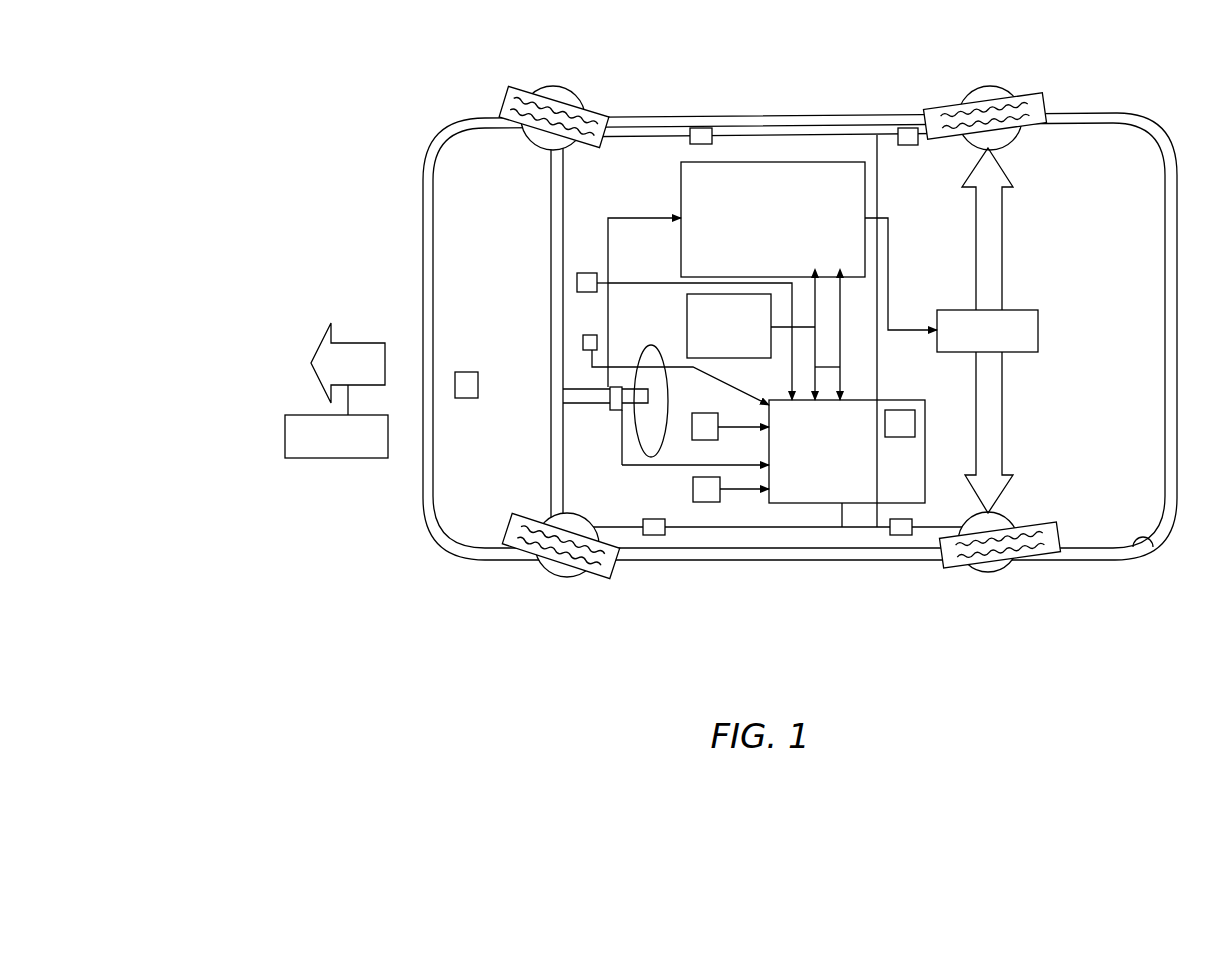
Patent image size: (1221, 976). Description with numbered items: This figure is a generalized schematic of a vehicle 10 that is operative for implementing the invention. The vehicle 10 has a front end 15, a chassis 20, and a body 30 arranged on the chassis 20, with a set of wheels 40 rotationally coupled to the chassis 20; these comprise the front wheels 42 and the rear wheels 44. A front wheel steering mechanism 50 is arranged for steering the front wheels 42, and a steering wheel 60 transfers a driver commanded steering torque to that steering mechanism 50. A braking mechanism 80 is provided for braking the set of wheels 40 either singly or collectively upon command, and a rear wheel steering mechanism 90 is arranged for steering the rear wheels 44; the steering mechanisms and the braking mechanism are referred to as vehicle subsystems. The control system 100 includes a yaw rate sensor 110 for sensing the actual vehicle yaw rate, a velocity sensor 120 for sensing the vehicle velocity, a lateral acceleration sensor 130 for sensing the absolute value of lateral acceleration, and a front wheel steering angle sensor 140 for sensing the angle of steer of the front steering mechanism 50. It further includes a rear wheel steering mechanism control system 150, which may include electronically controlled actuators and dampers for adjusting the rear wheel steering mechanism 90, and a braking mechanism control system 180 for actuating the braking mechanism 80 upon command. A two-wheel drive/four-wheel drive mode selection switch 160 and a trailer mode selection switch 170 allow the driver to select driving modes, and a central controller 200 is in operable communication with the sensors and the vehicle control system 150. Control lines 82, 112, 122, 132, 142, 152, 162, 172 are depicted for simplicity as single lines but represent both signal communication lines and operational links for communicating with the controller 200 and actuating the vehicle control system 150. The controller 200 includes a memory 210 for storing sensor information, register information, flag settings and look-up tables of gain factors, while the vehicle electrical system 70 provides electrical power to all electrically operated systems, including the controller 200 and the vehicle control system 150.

The vehicle 10 is at (455, 605).
The front end 15 is at (285, 432).
The chassis 20 is at (1135, 542).
The body 30 is at (1172, 525).
The set of wheels 40 is at (590, 603).
The front wheels 42 is at (525, 87).
The rear wheels 44 is at (1022, 95).
The front wheel steering mechanism 50 is at (574, 388).
The steering wheel 60 is at (648, 346).
The vehicle electrical system 70 is at (455, 380).
The braking mechanism 80 is at (525, 135).
The control line 82 is at (880, 163).
The rear wheel steering mechanism 90 is at (1023, 310).
The control system 100 is at (800, 505).
The yaw rate sensor 110 is at (697, 412).
The control line 112 is at (737, 430).
The velocity sensor 120 is at (771, 336).
The control line 122 is at (840, 367).
The lateral acceleration sensor 130 is at (697, 503).
The control line 132 is at (725, 503).
The front wheel steering angle sensor 140 is at (605, 415).
The control line 142 is at (638, 217).
The rear wheel steering mechanism control system 150 is at (838, 162).
The control line 152 is at (888, 313).
The two-wheel drive/four-wheel drive mode selection switch 160 is at (580, 270).
The control line 162 is at (600, 293).
The trailer mode selection switch 170 is at (580, 333).
The control line 172 is at (587, 362).
The braking mechanism control system 180 is at (700, 128).
The central controller 200 is at (822, 503).
The memory 210 is at (915, 428).